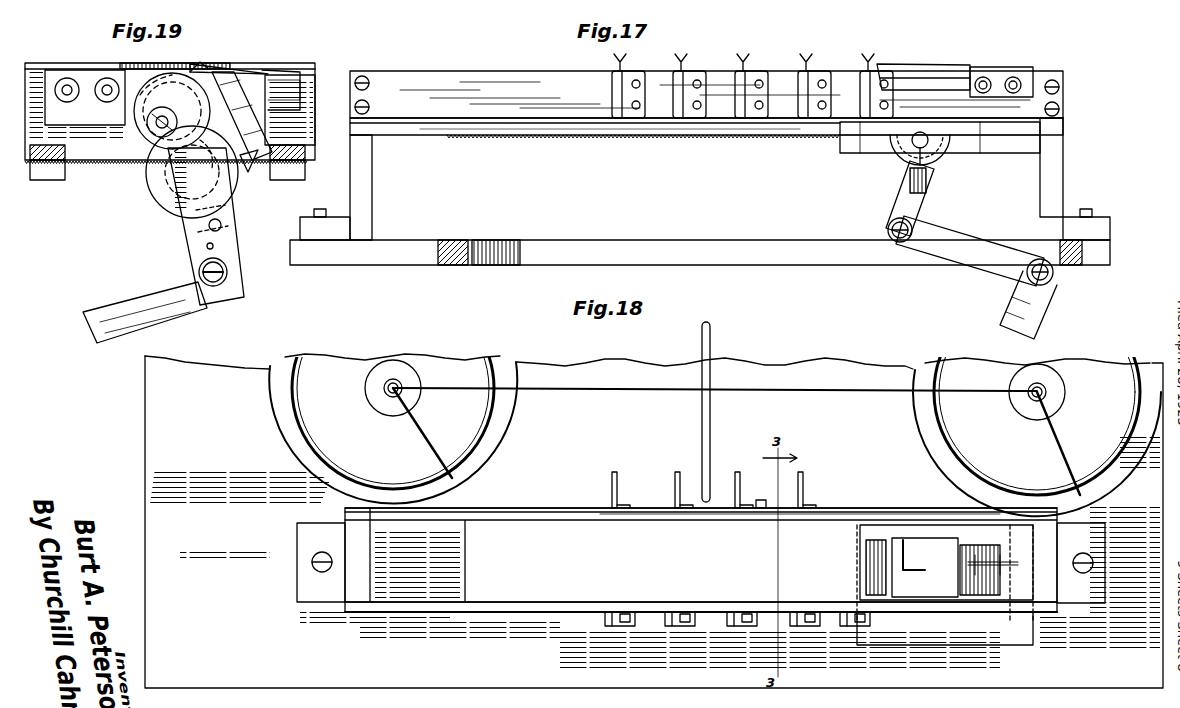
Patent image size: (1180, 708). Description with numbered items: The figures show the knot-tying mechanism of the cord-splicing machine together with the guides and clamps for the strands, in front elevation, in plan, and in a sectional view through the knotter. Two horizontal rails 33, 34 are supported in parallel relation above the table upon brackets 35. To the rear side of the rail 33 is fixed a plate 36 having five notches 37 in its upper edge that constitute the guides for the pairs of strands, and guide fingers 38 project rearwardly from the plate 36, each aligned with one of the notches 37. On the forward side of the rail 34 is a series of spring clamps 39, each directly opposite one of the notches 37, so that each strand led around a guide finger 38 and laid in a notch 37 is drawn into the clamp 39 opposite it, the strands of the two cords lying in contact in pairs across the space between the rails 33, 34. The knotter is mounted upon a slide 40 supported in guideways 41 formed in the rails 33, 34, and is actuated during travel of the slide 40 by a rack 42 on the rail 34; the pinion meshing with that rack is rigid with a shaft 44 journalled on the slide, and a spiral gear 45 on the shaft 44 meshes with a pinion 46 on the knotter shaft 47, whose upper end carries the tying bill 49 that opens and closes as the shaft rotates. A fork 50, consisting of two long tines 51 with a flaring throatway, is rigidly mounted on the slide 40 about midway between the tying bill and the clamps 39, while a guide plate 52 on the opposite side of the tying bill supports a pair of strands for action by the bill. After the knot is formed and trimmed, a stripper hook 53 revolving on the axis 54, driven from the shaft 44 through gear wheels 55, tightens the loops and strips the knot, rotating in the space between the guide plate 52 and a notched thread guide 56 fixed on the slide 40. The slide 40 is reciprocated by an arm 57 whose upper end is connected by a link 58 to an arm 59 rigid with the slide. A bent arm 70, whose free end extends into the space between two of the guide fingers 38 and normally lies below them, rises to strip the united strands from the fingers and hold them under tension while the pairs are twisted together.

In FIG. 18, the horizontal rail 33 is at (548, 522).
In FIG. 17, the horizontal rail 34 is at (482, 78).
In FIG. 18, the horizontal rail 34 is at (540, 604).
In FIG. 17, the bracket 35 is at (374, 194).
In FIG. 18, the bracket 35 is at (368, 556).
In FIG. 18, the plate 36 is at (560, 509).
In FIG. 18, the notch 37 is at (672, 512).
In FIG. 18, the guide finger 38 is at (615, 478).
In FIG. 17, the spring clamp 39 is at (617, 68).
In FIG. 18, the spring clamp 39 is at (676, 628).
In FIG. 17, the slide 40 is at (988, 126).
In FIG. 17, the guideway 41 is at (515, 123).
In FIG. 19, the rack 42 is at (90, 166).
In FIG. 17, the rack 42 is at (636, 136).
In FIG. 19, the shaft 44 is at (182, 200).
In FIG. 17, the shaft 44 is at (895, 150).
In FIG. 19, the spiral gear 45 is at (170, 205).
In FIG. 17, the spiral gear 45 is at (940, 166).
In FIG. 19, the pinion 46 is at (262, 112).
In FIG. 19, the knotter shaft 47 is at (249, 172).
In FIG. 19, the tying bill 49 is at (204, 62).
In FIG. 18, the tying bill 49 is at (905, 563).
In FIG. 18, the fork 50 is at (905, 597).
In FIG. 19, the tine 51 is at (222, 66).
In FIG. 17, the tine 51 is at (938, 72).
In FIG. 19, the guide plate 52 is at (250, 86).
In FIG. 19, the stripper hook 53 is at (185, 74).
In FIG. 19, the axis 54 is at (155, 132).
In FIG. 19, the gear wheel 55 is at (150, 138).
In FIG. 19, the notched thread guide 56 is at (272, 70).
In FIG. 17, the arm 57 is at (1047, 318).
In FIG. 19, the link 58 is at (116, 300).
In FIG. 17, the link 58 is at (958, 240).
In FIG. 19, the arm 59 is at (241, 296).
In FIG. 17, the arm 59 is at (893, 204).
In FIG. 18, the arm 70 is at (712, 433).